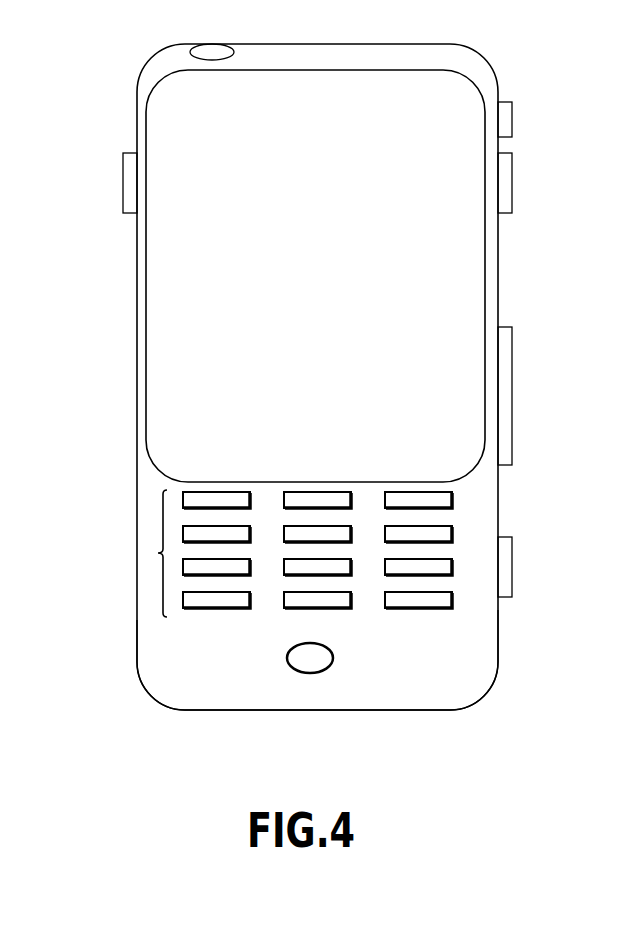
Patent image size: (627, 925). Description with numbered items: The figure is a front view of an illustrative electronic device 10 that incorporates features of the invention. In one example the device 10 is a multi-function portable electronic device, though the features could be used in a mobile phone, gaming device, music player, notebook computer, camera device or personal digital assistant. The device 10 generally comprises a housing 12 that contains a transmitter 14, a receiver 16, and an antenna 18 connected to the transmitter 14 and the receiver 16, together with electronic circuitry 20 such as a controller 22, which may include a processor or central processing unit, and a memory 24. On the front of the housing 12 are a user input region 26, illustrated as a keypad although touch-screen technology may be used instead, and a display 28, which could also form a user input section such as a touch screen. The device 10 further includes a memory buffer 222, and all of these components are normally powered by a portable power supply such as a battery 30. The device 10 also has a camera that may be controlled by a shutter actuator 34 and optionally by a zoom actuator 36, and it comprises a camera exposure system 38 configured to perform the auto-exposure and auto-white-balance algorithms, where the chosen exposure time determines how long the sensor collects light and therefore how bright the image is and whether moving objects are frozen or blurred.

The electronic device 10 is at (497, 717).
The housing 12 is at (461, 46).
The transmitter 14 is at (150, 610).
The receiver 16 is at (150, 657).
The antenna 18 is at (150, 491).
The electronic circuitry 20 is at (478, 492).
The controller 22 is at (478, 523).
The memory 24 is at (478, 656).
The user input region 26 is at (160, 553).
The display 28 is at (180, 264).
The battery 30 is at (398, 688).
The shutter actuator 34 is at (505, 559).
The zoom actuator 36 is at (505, 358).
The camera exposure system 38 is at (180, 697).
The memory buffer 222 is at (338, 688).